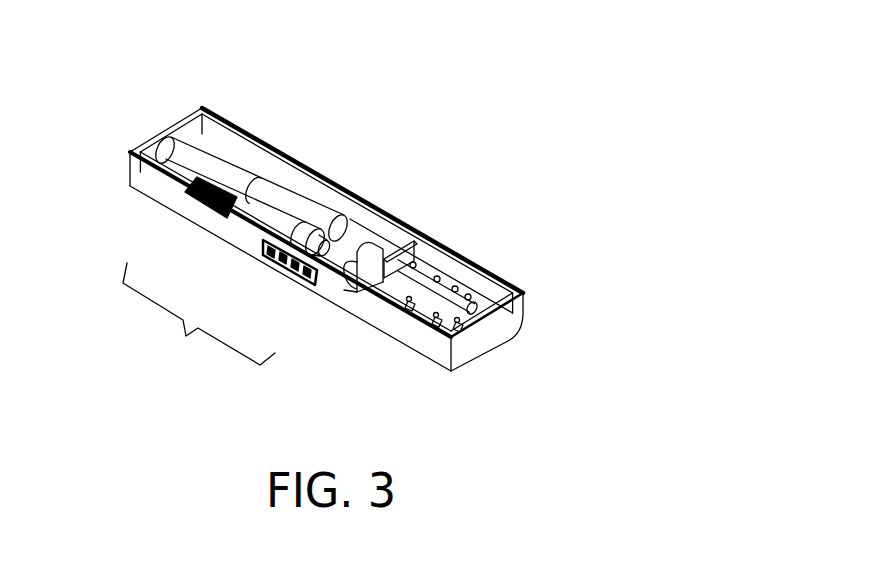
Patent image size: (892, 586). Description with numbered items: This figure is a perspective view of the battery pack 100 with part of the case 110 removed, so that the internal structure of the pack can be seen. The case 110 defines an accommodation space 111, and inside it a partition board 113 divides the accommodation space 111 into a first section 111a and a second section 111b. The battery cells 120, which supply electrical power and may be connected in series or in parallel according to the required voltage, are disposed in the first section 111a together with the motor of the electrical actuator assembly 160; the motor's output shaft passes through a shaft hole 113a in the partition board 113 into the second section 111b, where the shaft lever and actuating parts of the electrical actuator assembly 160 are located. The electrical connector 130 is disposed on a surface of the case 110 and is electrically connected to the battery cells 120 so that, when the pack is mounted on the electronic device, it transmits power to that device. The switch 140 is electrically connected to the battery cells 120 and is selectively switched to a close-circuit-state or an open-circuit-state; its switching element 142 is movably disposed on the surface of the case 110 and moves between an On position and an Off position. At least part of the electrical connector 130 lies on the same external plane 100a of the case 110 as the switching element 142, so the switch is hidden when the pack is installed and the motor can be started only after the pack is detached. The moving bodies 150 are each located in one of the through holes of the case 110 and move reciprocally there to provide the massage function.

The battery pack 100 is at (441, 104).
The external plane 100a is at (402, 343).
The case 110 is at (147, 138).
The accommodation space 111 is at (199, 323).
The first section 111a is at (232, 228).
The second section 111b is at (374, 302).
The partition board 113 is at (418, 252).
The shaft hole 113a is at (413, 242).
The battery cell 120 is at (282, 180).
The electrical connector 130 is at (190, 197).
The switch 140 is at (305, 240).
The switching element 142 is at (287, 275).
The moving body 150 is at (410, 312).
The electrical actuator assembly 160 is at (391, 240).